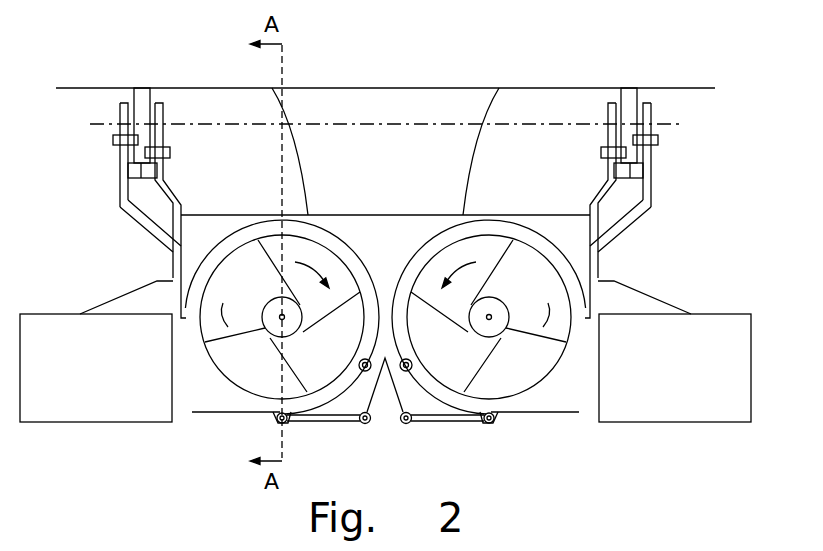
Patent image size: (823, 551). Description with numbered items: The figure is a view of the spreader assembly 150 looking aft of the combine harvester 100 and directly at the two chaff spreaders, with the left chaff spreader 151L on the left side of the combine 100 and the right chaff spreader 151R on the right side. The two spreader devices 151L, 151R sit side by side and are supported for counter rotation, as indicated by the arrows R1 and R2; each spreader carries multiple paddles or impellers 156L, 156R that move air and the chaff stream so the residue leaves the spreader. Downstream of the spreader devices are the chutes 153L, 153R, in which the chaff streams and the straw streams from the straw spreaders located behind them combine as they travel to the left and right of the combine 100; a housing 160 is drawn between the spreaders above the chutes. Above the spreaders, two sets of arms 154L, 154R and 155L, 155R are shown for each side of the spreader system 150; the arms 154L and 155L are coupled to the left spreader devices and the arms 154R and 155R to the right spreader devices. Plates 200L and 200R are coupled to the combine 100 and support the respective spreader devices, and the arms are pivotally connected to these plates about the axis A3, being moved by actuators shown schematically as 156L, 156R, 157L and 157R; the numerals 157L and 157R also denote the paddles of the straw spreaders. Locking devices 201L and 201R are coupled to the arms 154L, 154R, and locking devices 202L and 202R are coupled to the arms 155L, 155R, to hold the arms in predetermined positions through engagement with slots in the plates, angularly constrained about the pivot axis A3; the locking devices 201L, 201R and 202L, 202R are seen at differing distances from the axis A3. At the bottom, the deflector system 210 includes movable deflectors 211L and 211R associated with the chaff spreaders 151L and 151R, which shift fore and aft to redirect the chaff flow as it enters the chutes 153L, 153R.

The combine harvester 100 is at (675, 74).
The spreader assembly 150 is at (705, 275).
The right chaff spreader device 151R is at (238, 440).
The left chaff spreader device 151L is at (519, 438).
The right chute 153R is at (100, 422).
The left chute 153L is at (680, 422).
The right arm 154R is at (148, 231).
The left arm 154L is at (635, 225).
The right arm 155R is at (183, 200).
The left arm 155L is at (592, 203).
The right actuator / paddles 156R is at (128, 170).
The left actuator / paddles 156L is at (648, 175).
The right actuator / paddles 157R is at (128, 205).
The left actuator / paddles 157L is at (645, 205).
The housing 160 is at (400, 181).
The right plate 200R is at (142, 100).
The left plate 200L is at (629, 103).
The right locking device 201R is at (113, 141).
The left locking device 201L is at (658, 141).
The right locking device 202R is at (170, 153).
The left locking device 202L is at (605, 152).
The deflector system 210 is at (430, 438).
The right movable deflector 211R is at (215, 412).
The left movable deflector 211L is at (553, 412).
The pivot axis A3 is at (665, 124).
The rotation arrow R1 is at (317, 272).
The rotation arrow R2 is at (444, 272).